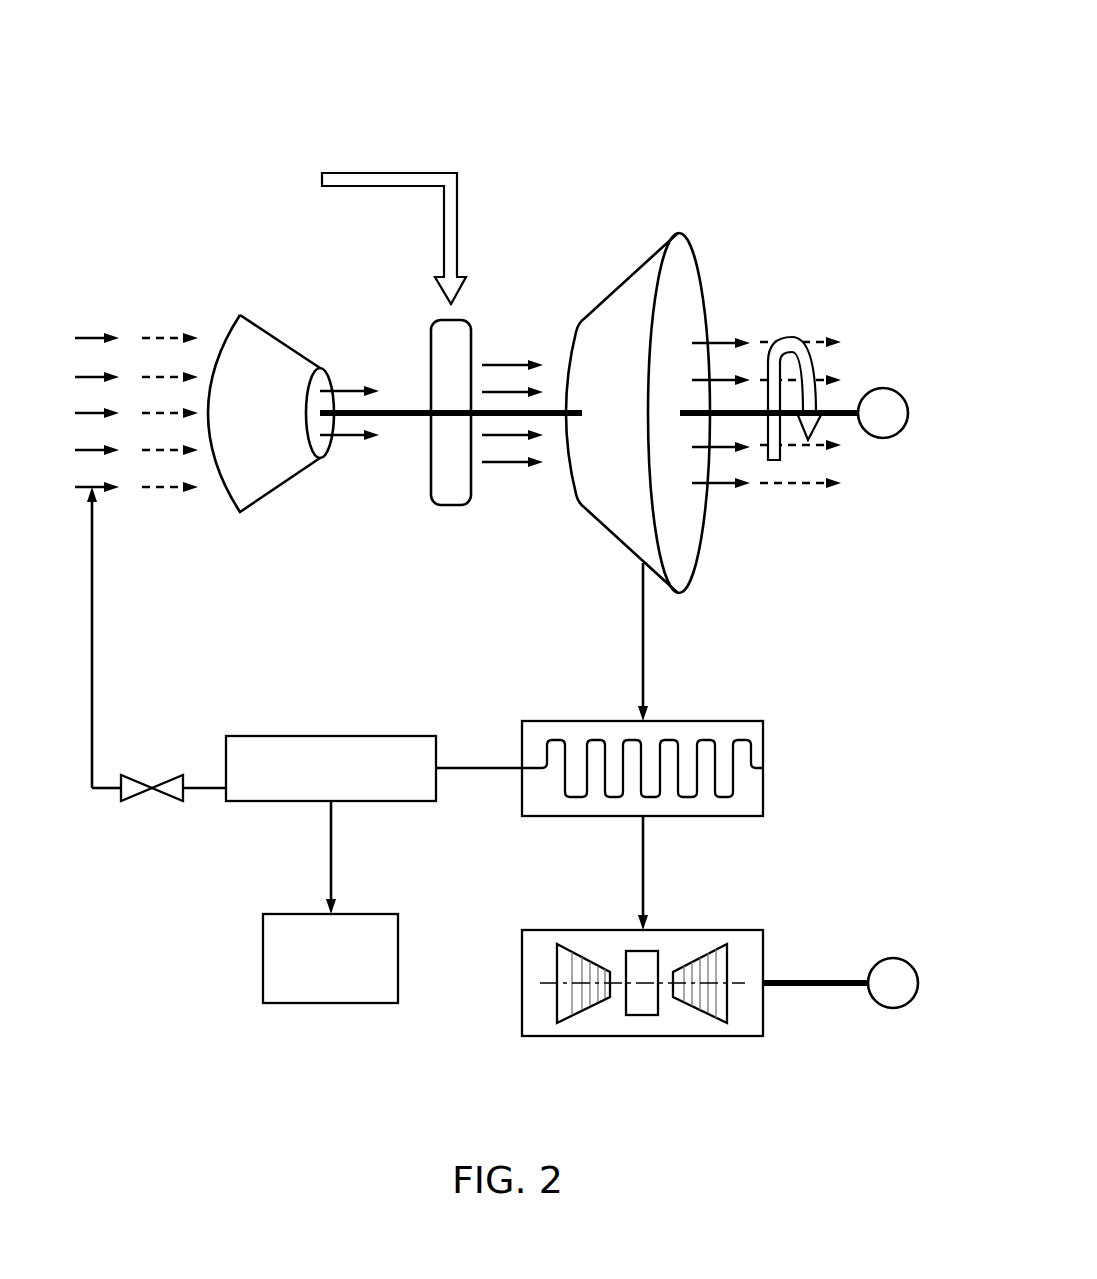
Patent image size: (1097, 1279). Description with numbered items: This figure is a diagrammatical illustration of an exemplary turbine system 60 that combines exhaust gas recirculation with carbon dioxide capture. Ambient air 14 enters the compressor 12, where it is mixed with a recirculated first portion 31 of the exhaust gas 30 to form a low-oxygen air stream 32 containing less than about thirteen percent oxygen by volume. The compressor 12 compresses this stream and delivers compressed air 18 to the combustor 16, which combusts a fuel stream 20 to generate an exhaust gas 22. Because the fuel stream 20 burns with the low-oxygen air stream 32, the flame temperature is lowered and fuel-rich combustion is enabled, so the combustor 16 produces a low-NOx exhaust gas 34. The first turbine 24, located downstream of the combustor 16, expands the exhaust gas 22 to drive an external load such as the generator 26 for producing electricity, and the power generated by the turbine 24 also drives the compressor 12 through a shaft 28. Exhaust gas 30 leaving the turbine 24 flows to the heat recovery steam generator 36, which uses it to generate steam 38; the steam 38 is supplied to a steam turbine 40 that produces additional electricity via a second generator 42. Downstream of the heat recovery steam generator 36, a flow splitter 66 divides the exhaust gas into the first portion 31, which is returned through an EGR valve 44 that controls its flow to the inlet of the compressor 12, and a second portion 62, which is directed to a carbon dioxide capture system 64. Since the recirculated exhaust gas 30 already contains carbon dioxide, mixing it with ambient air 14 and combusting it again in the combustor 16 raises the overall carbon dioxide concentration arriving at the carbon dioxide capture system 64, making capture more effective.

The turbine system 60 is at (782, 56).
The ambient air 14 is at (86, 338).
The low-oxygen air stream 32 is at (165, 338).
The compressor 12 is at (288, 342).
The compressed air 18 is at (343, 438).
The shaft 28 is at (556, 412).
The fuel stream 20 is at (390, 172).
The combustor 16 is at (472, 345).
The exhaust gas 22 is at (504, 464).
The first turbine 24 is at (697, 258).
The first portion of the exhaust gas 30 is at (724, 486).
The low-NOx exhaust gas 34 is at (806, 338).
The generator 26 is at (883, 388).
The first portion of the exhaust gas 31 is at (94, 640).
The EGR valve 44 is at (131, 802).
The flow splitter 66 is at (331, 736).
The heat recovery steam generator 36 is at (752, 721).
The steam 38 is at (645, 864).
The steam turbine 40 is at (752, 930).
The generator 42 is at (893, 958).
The second portion of the exhaust gas 62 is at (333, 849).
The carbon dioxide capture system 64 is at (400, 958).